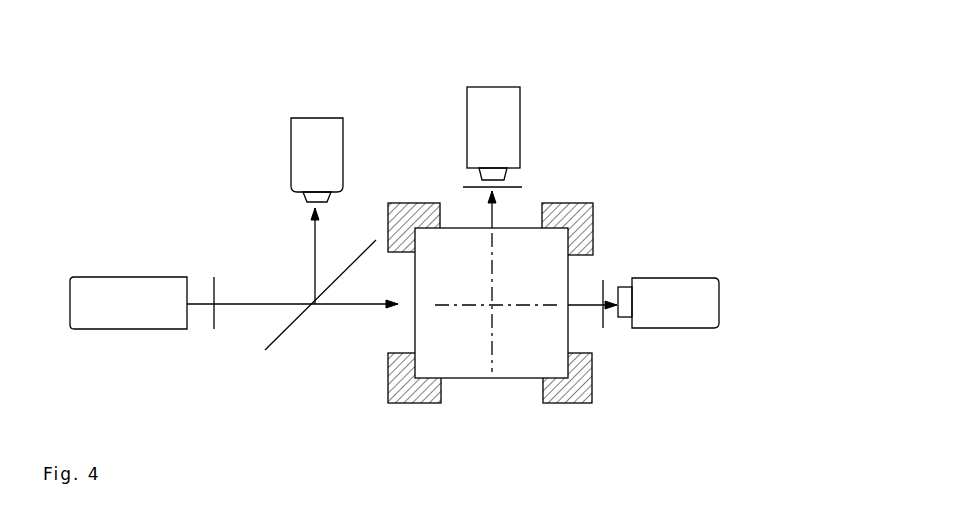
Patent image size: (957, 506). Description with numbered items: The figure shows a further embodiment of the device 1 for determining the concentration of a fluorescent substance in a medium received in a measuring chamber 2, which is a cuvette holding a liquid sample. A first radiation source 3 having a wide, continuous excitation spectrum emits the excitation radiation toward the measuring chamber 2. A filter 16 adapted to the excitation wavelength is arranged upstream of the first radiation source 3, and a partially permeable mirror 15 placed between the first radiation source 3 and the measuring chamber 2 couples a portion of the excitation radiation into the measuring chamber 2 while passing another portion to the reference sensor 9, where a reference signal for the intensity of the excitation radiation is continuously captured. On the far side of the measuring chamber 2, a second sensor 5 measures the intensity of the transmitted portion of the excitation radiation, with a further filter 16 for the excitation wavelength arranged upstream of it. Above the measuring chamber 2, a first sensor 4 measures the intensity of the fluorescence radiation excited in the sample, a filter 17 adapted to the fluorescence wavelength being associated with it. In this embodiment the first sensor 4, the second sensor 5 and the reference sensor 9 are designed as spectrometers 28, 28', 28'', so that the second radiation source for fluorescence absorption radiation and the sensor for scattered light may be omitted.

The device 1 is at (692, 152).
The measuring chamber 2 is at (427, 178).
The first radiation source 3 is at (90, 337).
The first sensor 4 is at (523, 87).
The second sensor 5 is at (733, 260).
The reference sensor 9 is at (280, 173).
The partially permeable mirror 15 is at (283, 340).
The filter 16 is at (212, 337).
The filter 17 is at (528, 180).
The spectrometer 28 is at (316, 68).
The spectrometer 28' is at (494, 44).
The spectrometer 28'' is at (776, 312).